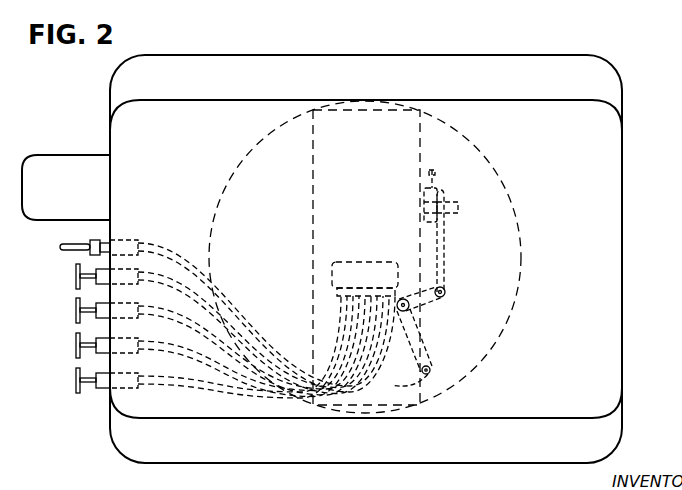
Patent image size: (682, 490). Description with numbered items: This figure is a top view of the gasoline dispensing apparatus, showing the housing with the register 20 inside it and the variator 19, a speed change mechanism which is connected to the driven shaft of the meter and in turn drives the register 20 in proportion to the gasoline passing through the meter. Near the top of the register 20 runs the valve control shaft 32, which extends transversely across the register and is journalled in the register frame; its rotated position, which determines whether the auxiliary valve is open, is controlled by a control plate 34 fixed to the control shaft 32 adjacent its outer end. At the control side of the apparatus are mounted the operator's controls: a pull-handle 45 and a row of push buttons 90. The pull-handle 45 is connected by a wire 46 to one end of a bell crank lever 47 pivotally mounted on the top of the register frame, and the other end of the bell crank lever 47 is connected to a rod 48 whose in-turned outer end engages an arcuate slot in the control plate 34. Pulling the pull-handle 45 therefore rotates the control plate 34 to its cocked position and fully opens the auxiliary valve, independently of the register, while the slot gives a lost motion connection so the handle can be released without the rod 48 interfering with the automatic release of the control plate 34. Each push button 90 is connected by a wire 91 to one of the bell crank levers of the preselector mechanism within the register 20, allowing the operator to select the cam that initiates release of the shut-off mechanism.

The variator 19 is at (233, 178).
The register 20 is at (313, 170).
The control shaft 32 is at (458, 207).
The control plate 34 is at (436, 172).
The pull-handle 45 is at (73, 252).
The wire 46 is at (430, 365).
The bell crank lever 47 is at (430, 302).
The rod 48 is at (446, 250).
The push buttons 90 is at (77, 280).
The wire 91 is at (268, 400).